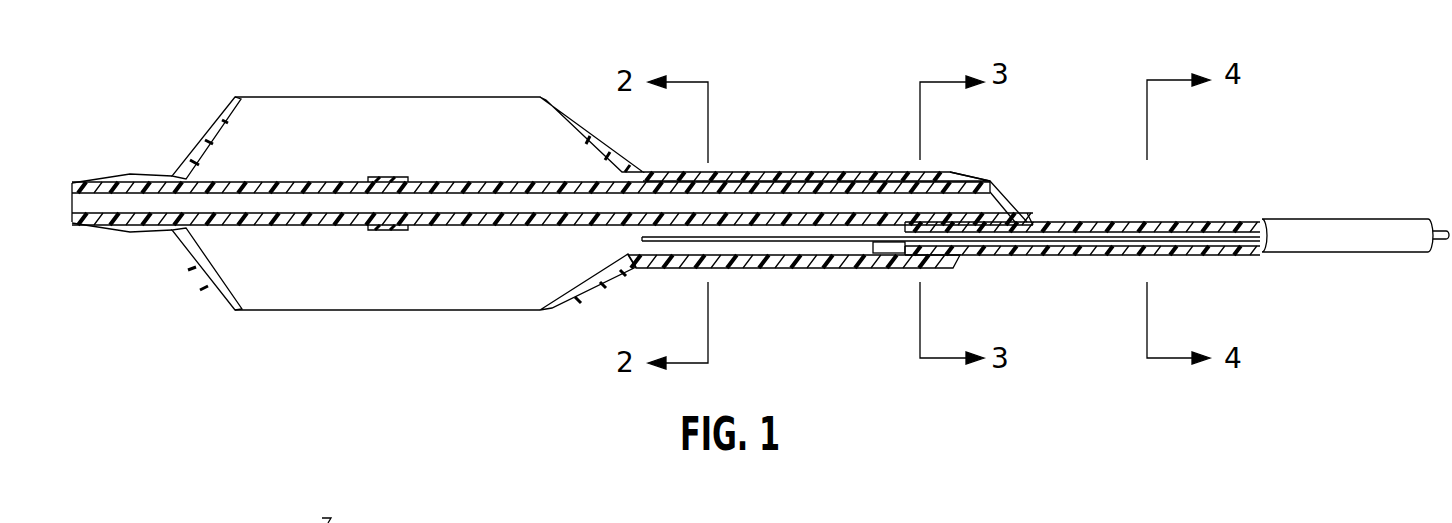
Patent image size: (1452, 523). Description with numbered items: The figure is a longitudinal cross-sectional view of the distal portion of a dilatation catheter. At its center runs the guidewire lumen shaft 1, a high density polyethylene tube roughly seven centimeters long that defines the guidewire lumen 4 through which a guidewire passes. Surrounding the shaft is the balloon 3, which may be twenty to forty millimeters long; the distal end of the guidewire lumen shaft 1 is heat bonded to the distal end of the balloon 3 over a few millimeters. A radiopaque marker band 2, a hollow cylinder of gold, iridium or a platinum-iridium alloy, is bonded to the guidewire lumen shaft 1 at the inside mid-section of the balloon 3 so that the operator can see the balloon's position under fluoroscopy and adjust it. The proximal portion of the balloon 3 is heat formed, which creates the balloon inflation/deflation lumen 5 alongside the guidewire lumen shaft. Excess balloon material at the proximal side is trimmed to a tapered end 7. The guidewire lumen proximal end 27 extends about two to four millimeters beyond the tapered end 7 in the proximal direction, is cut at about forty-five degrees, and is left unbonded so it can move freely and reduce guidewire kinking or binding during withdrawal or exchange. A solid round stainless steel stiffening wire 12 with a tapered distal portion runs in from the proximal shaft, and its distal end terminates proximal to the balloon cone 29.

The guidewire lumen shaft 1 is at (258, 182).
The radiopaque marker band 2 is at (393, 178).
The balloon 3 is at (540, 97).
The guidewire lumen 4 is at (734, 191).
The balloon inflation/deflation lumen 5 is at (771, 249).
The tapered end 7 is at (953, 261).
The stiffening wire 12 is at (873, 242).
The guidewire lumen proximal end 27 is at (993, 178).
The balloon cone 29 is at (639, 268).